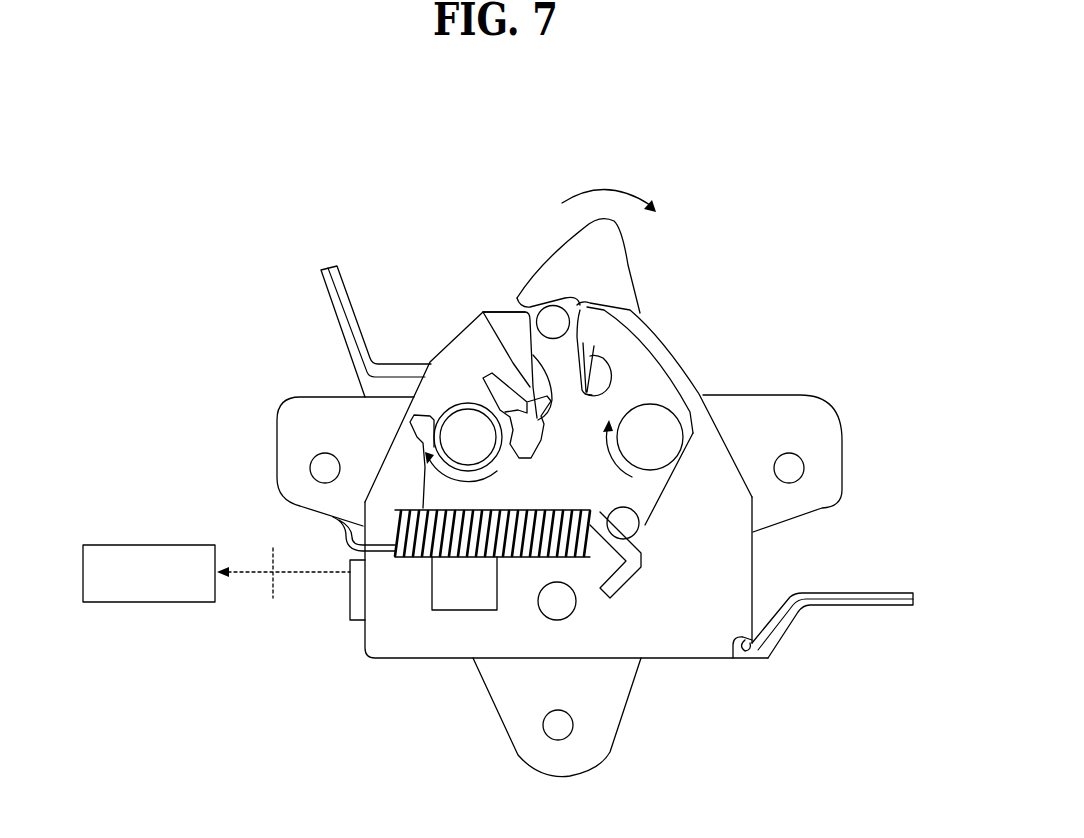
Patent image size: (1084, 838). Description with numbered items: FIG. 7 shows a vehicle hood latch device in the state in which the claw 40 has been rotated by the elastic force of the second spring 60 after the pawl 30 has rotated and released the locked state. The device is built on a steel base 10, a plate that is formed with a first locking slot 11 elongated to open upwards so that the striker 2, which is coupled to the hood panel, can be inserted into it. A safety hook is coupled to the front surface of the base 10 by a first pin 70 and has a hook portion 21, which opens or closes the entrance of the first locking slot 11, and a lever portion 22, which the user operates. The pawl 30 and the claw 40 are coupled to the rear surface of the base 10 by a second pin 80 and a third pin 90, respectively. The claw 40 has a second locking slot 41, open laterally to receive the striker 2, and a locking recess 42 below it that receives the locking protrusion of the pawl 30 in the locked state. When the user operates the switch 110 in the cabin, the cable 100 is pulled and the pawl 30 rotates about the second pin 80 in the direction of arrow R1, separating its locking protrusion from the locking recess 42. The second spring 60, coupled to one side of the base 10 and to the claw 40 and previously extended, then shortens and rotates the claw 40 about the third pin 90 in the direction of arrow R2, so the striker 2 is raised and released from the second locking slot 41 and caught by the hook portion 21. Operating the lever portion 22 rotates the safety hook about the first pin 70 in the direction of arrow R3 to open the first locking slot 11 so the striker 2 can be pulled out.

The striker 2 is at (557, 320).
The base 10 is at (704, 640).
The first locking slot 11 is at (530, 351).
The hook portion 21 is at (527, 292).
The lever portion 22 is at (322, 298).
The pawl 30 is at (443, 495).
The claw 40 is at (643, 390).
The second locking slot 41 is at (609, 373).
The locking recess 42 is at (483, 312).
The second spring 60 is at (477, 560).
The first pin 70 is at (565, 607).
The second pin 80 is at (472, 447).
The third pin 90 is at (660, 437).
The cable 100 is at (306, 573).
The switch 110 is at (148, 543).
The arrow R1 is at (461, 479).
The arrow R2 is at (599, 448).
The arrow R3 is at (609, 190).